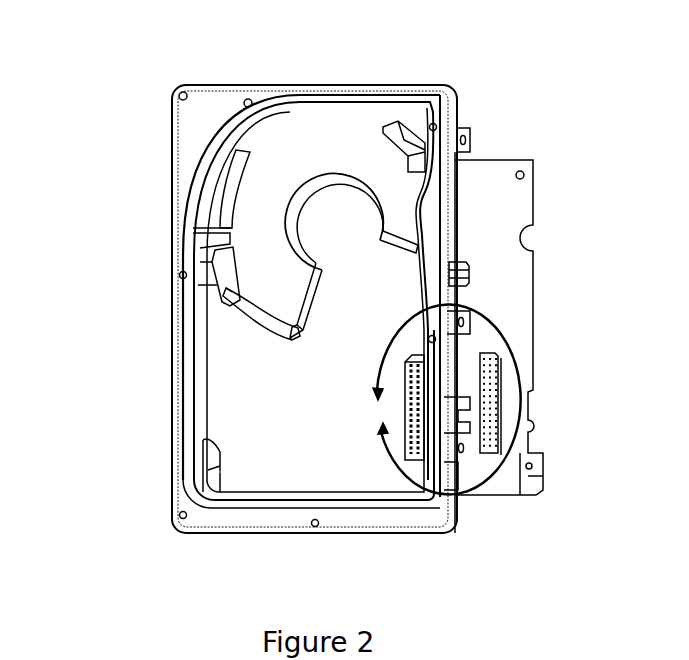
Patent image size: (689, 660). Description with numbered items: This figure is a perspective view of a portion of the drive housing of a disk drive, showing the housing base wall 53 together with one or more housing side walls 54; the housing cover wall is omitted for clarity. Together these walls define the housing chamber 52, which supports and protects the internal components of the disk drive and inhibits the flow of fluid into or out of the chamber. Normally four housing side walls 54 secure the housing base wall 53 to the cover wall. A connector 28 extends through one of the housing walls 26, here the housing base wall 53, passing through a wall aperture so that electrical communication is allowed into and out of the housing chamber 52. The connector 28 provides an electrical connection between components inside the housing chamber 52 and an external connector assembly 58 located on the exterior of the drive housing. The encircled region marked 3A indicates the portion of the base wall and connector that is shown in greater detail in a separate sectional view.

The housing side wall 54 is at (370, 86).
The housing wall 26 is at (169, 481).
The housing chamber 52 is at (243, 397).
The housing base wall 53 is at (290, 462).
The connector 28 is at (410, 362).
The external connector assembly 58 is at (495, 375).
The section view indicator 3A is at (428, 399).